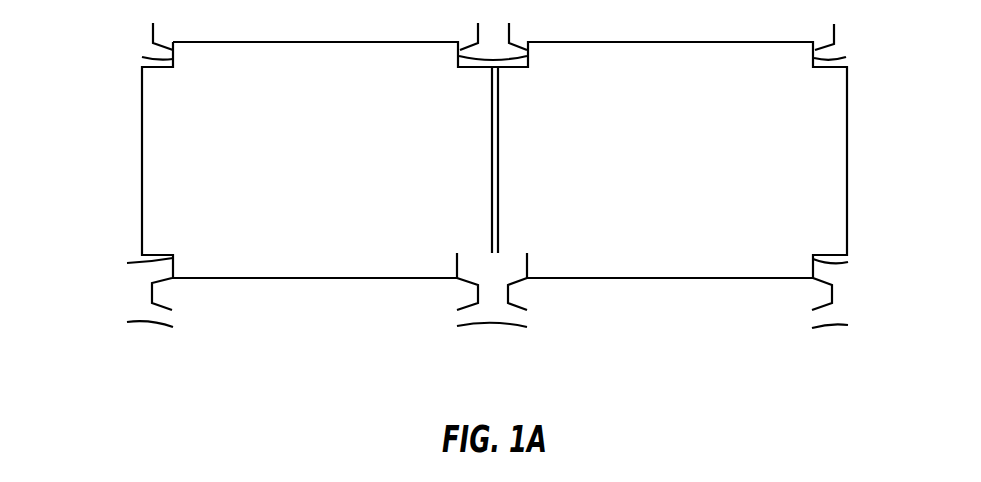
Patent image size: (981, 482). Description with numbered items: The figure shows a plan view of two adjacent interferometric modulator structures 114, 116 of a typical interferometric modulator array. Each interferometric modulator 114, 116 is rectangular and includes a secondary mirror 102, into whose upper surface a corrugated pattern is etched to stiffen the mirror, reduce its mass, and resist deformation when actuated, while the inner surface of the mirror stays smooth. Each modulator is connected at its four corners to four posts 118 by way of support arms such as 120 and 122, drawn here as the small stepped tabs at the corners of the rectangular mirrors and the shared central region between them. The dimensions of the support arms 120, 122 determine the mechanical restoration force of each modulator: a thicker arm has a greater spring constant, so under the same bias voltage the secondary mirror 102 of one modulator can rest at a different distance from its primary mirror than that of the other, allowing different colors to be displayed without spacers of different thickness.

The secondary mirror 102 is at (713, 279).
The interferometric modulator structure 114 is at (327, 288).
The interferometric modulator structure 116 is at (601, 288).
The posts 118 is at (128, 292).
The support arm 120 is at (170, 327).
The support arm 122 is at (476, 326).